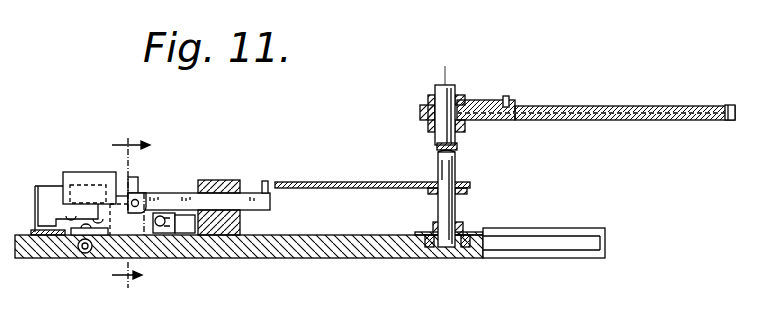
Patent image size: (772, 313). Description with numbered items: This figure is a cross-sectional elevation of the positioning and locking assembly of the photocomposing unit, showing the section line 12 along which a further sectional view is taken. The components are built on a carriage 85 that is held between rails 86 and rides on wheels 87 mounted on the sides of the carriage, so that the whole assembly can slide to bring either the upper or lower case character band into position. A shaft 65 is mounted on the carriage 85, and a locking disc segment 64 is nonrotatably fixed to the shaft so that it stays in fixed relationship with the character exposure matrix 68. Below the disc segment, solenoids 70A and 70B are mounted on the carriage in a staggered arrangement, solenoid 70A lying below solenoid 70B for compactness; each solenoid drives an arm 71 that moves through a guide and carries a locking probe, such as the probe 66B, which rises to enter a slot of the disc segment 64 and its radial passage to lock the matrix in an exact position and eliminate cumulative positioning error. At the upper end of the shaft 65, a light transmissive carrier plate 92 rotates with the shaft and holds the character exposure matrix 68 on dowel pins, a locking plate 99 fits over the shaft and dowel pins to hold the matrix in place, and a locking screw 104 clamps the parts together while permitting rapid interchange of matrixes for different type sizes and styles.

The section line 12- 12 is at (125, 132).
The locking disc segment 64 is at (346, 181).
The shaft 65 is at (513, 193).
The locking probe 66B is at (263, 182).
The character exposure matrix 68 is at (697, 104).
The solenoid 70A is at (118, 222).
The solenoid 70B is at (72, 183).
The arm 71 is at (131, 178).
The carriage 85 is at (328, 248).
The rail 86 is at (558, 242).
The wheel 87 is at (80, 253).
The light transmissive carrier plate 92 is at (726, 121).
The locking plate 99 is at (488, 101).
The locking screw 104 is at (460, 95).